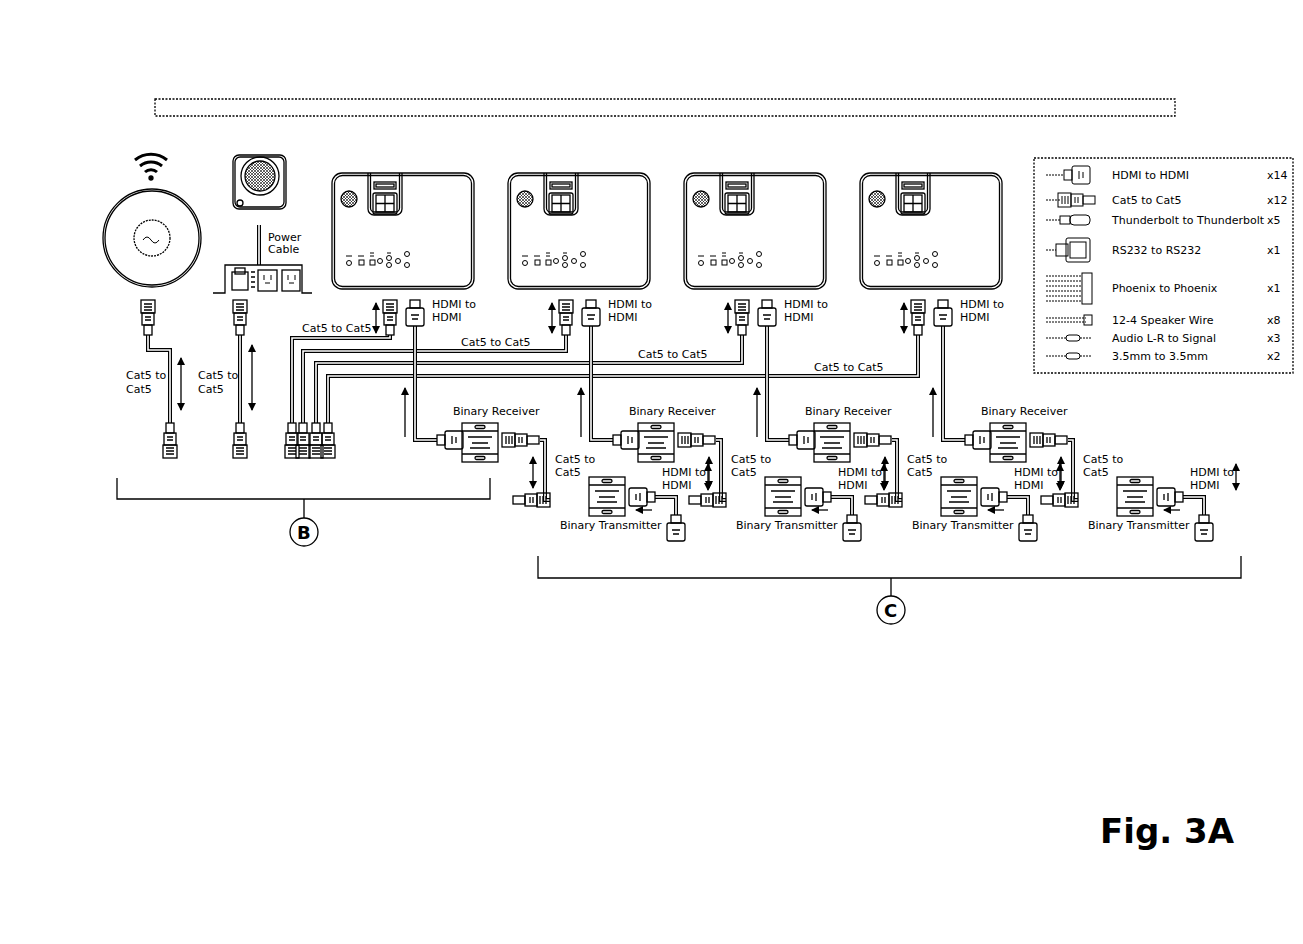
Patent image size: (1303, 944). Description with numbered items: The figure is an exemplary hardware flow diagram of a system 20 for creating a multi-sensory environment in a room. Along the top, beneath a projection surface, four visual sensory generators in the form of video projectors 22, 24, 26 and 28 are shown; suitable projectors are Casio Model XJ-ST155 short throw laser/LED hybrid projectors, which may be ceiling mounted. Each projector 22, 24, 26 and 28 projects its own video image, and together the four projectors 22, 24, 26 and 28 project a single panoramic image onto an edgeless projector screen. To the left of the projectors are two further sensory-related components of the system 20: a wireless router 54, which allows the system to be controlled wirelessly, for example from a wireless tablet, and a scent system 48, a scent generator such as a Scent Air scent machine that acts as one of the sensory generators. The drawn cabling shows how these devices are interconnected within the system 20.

The system 20 is at (1180, 112).
The projector 22 is at (458, 174).
The projector 24 is at (634, 174).
The projector 26 is at (810, 174).
The projector 28 is at (986, 174).
The scent system 48 is at (285, 160).
The wireless router 54 is at (173, 190).